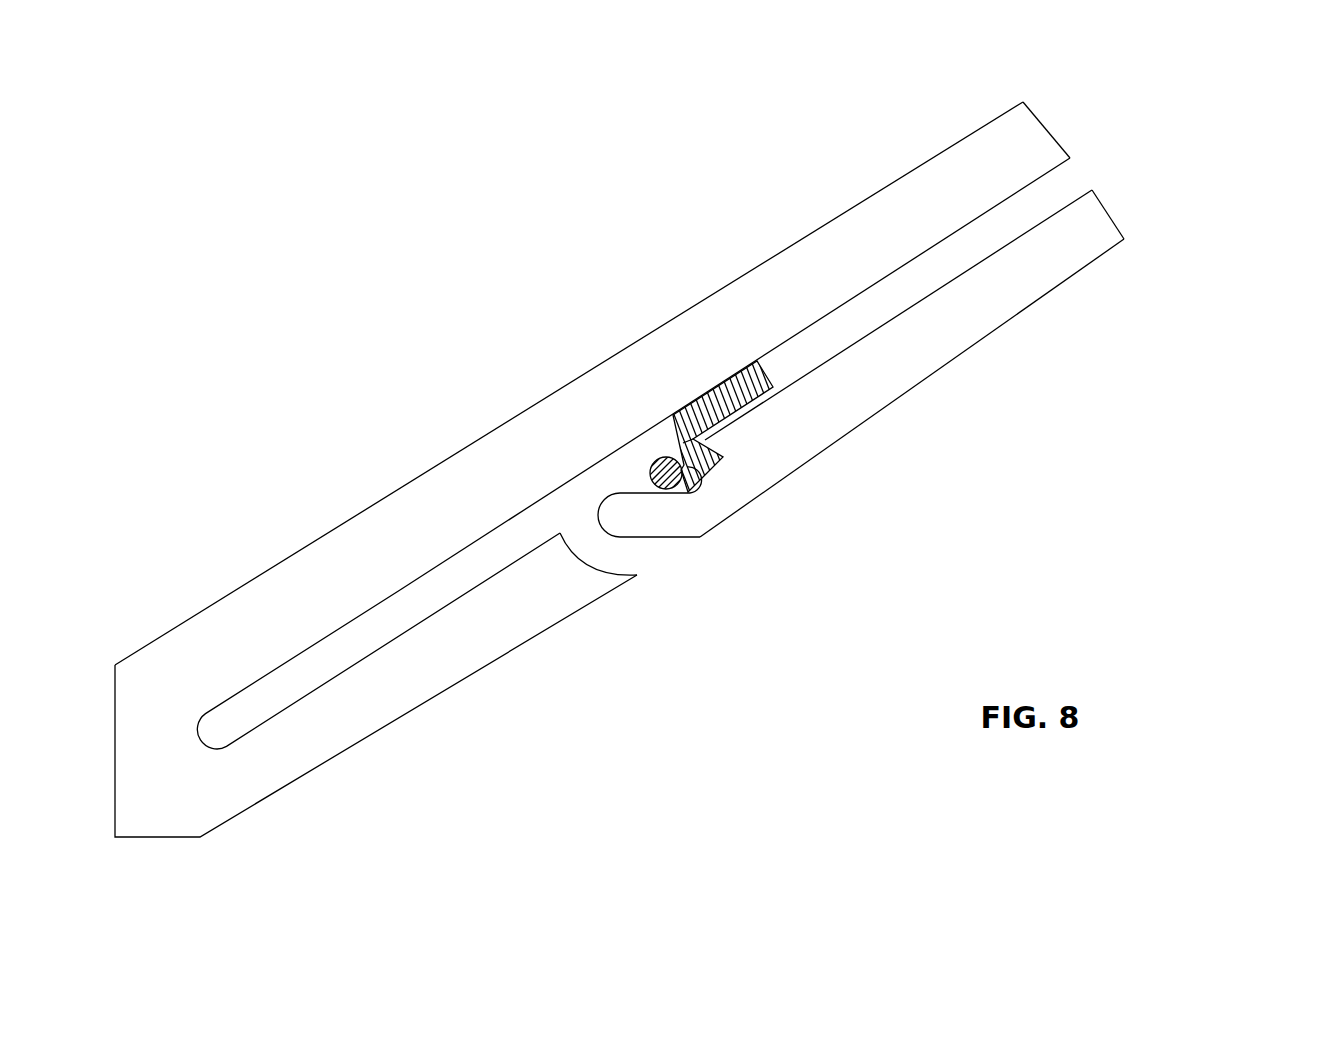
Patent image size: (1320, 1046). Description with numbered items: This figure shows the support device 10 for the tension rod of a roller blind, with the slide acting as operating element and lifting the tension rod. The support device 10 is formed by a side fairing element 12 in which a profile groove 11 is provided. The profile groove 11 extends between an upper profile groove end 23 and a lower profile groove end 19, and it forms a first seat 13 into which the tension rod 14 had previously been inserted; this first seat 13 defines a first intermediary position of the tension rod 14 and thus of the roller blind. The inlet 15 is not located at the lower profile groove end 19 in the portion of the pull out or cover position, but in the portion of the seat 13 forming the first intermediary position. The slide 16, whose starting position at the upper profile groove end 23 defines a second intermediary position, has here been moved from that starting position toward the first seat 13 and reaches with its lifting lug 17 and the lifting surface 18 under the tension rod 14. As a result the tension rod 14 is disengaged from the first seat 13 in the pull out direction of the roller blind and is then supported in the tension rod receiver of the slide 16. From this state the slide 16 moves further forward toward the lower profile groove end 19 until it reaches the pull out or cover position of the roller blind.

The support device 10 is at (497, 250).
The profile groove 11 is at (851, 333).
The side fairing element 12 is at (737, 272).
The first seat 13 is at (689, 509).
The tension rod 14 is at (691, 487).
The inlet 15 is at (636, 556).
The slide 16 is at (711, 410).
The lifting lug 17 is at (708, 483).
The lifting surface 18 is at (683, 447).
The lower profile groove end 19 is at (233, 743).
The upper profile groove end 23 is at (1118, 190).